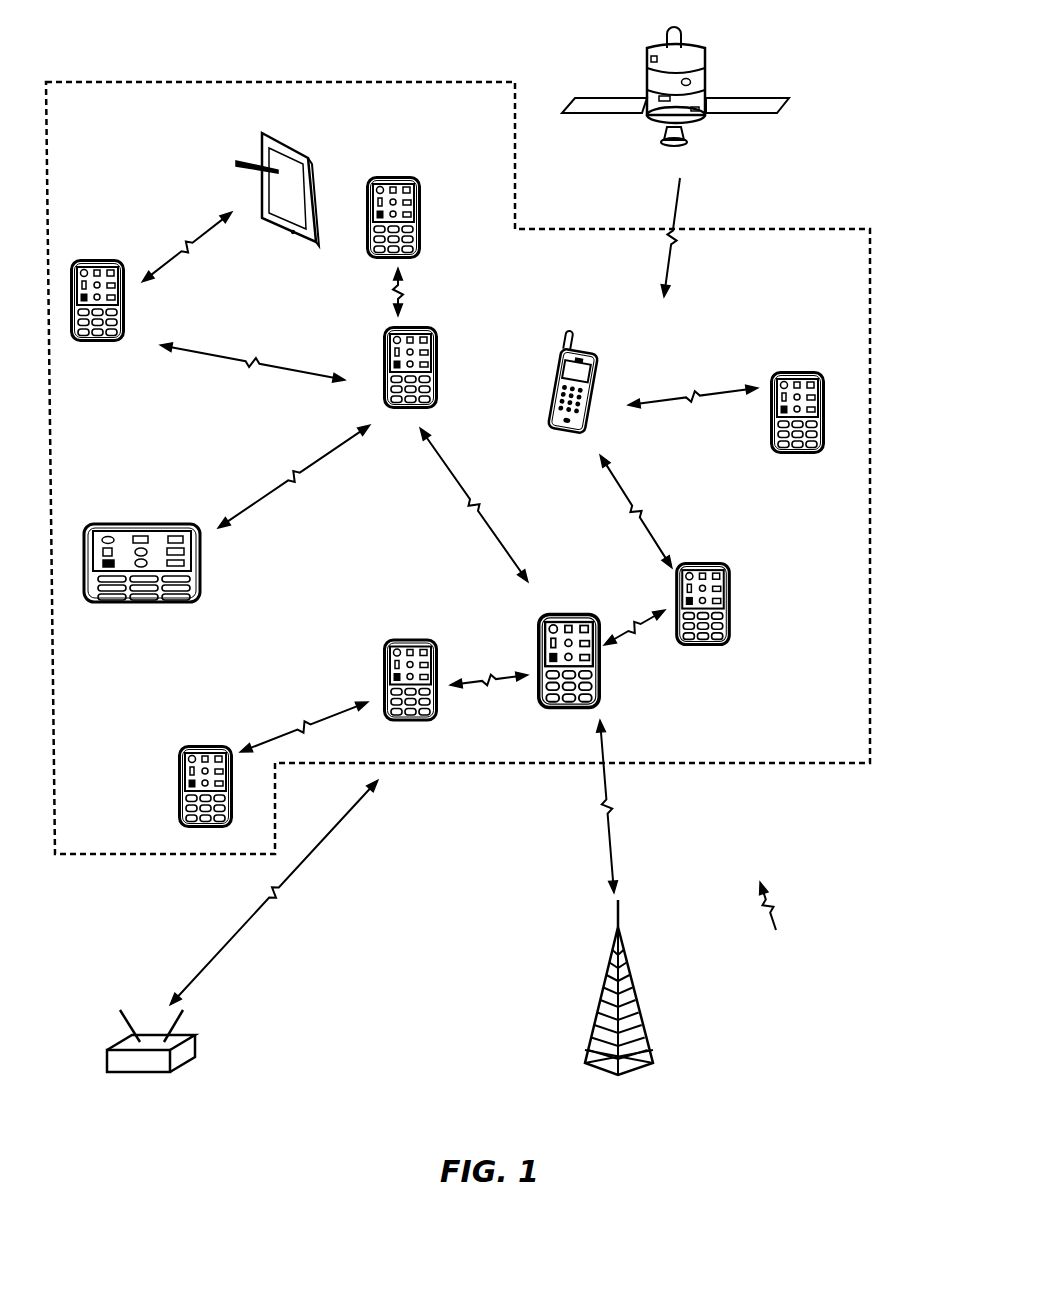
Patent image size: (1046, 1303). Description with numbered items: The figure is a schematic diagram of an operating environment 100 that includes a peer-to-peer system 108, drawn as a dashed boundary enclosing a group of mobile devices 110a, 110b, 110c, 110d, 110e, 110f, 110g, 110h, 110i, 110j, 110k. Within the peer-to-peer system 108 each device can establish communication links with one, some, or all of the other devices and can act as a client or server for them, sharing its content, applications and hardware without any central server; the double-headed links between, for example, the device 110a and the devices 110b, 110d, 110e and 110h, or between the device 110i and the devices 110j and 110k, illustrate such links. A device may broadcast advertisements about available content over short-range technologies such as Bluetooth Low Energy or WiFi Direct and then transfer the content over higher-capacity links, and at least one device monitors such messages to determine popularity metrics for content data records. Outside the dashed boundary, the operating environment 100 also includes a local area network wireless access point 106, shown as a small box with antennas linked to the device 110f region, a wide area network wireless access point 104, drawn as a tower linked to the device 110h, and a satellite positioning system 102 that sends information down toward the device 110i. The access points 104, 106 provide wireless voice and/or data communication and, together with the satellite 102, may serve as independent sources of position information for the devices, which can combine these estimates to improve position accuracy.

The operating environment 100 is at (784, 921).
The satellite positioning system 102 is at (706, 62).
The wide area network wireless access point 104 is at (630, 975).
The local area network wireless access point 106 is at (195, 1046).
The peer-to-peer system 108 is at (197, 82).
The device 110a is at (420, 326).
The device 110b is at (84, 260).
The device 110c is at (293, 133).
The device 110d is at (391, 177).
The device 110e is at (114, 523).
The device 110f is at (200, 745).
The device 110g is at (408, 639).
The device 110h is at (562, 612).
The device 110i is at (578, 352).
The device 110j is at (708, 563).
The device 110k is at (792, 370).